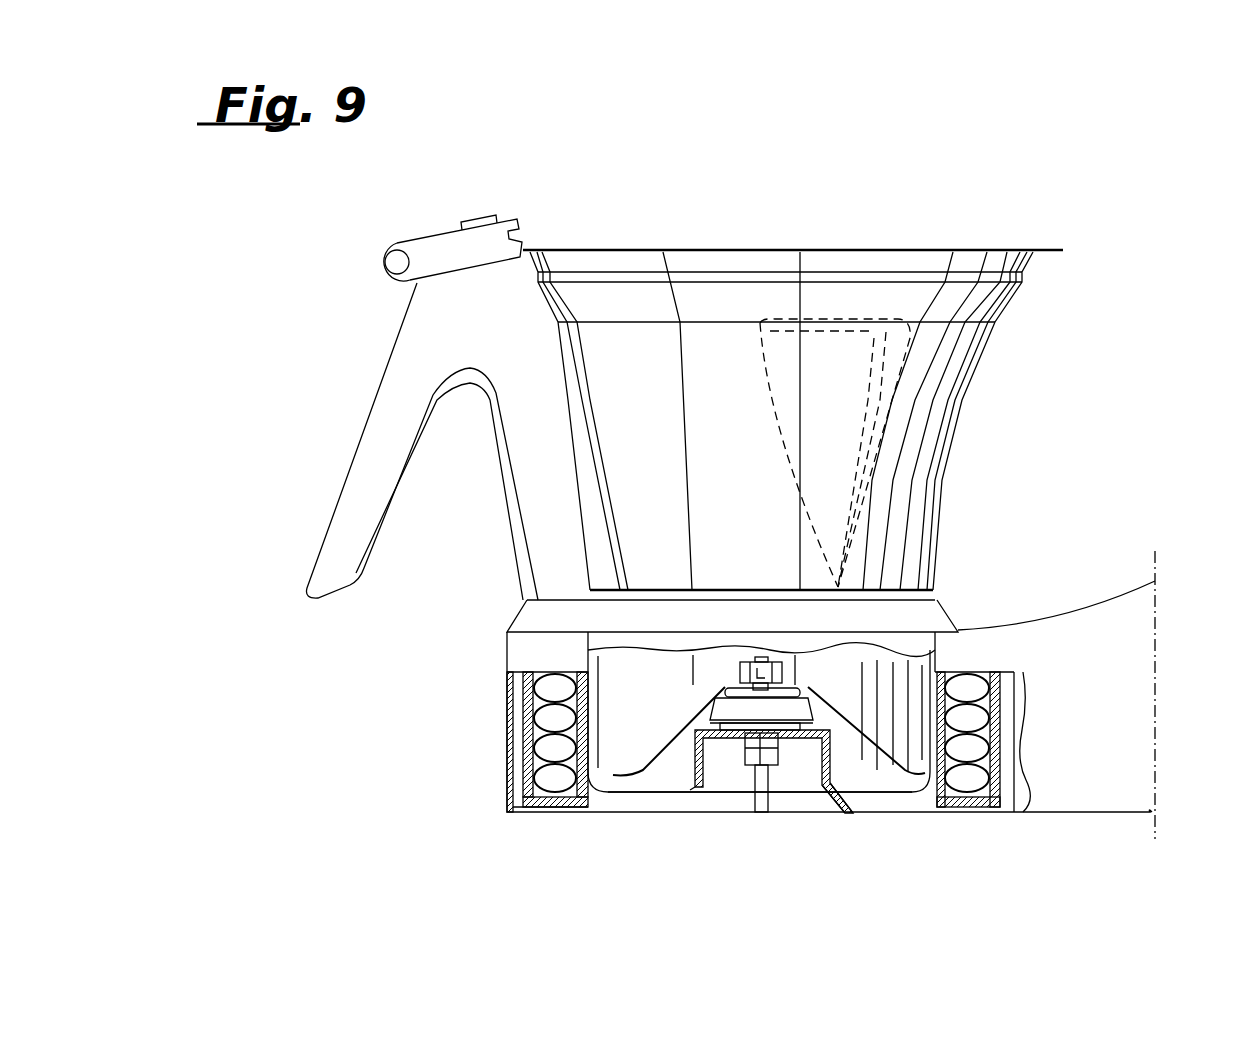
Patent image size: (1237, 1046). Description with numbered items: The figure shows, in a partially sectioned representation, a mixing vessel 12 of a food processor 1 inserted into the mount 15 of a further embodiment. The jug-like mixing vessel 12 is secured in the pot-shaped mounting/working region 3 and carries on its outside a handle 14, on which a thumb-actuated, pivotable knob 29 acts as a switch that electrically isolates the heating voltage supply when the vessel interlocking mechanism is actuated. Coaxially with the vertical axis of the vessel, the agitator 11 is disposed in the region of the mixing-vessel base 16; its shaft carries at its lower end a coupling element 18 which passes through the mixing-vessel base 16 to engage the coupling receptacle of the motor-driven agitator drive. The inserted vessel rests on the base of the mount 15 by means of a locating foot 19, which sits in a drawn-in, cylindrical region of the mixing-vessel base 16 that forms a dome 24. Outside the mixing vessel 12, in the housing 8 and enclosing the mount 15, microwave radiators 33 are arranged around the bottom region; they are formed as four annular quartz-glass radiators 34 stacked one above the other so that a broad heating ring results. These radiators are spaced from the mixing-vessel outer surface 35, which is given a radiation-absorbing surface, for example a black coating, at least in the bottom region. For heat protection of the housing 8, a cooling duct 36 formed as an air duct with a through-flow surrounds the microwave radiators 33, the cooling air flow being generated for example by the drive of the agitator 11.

The food processor 1 is at (1164, 538).
The mounting/working region 3 is at (472, 645).
The housing 8 is at (505, 742).
The agitator 11 is at (643, 770).
The mixing vessel 12 is at (968, 410).
The handle 14 is at (372, 438).
The mount 15 is at (570, 808).
The mixing-vessel base 16 is at (682, 792).
The coupling element 18 is at (750, 747).
The locating foot 19 is at (822, 787).
The dome 24 is at (833, 775).
The pivotable knob 29 is at (441, 247).
The microwave radiators 33 is at (526, 714).
The quartz-glass radiators 34 is at (969, 781).
The mixing-vessel outer surface 35 is at (961, 674).
The cooling duct 36 is at (518, 772).